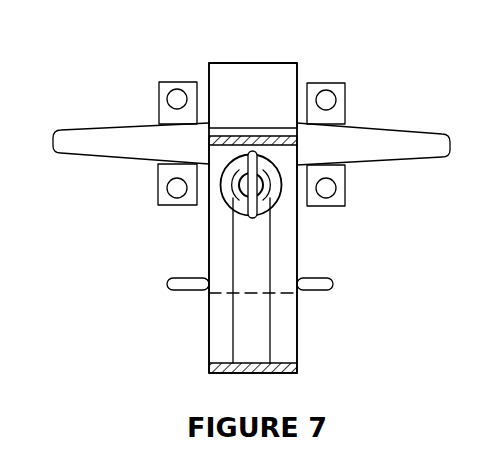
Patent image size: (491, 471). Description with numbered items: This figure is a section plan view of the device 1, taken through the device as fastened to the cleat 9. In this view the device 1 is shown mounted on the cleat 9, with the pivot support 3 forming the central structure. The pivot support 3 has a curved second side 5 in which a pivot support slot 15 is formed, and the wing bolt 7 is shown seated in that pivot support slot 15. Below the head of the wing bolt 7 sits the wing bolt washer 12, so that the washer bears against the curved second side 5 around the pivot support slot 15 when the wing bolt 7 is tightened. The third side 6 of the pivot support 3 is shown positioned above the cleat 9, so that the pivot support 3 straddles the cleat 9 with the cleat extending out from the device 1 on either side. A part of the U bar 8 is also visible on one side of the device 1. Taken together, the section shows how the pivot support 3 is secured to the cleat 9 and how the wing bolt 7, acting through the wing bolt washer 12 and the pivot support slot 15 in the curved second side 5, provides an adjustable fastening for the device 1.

The device 1 is at (268, 63).
The U bar 8 is at (240, 63).
The third side 6 is at (233, 136).
The cleat 9 is at (390, 127).
The pivot support 3 is at (208, 230).
The wing bolt washer 12 is at (233, 213).
The wing bolt 7 is at (270, 210).
The pivot support slot 15 is at (268, 278).
The curved second side 5 is at (208, 335).